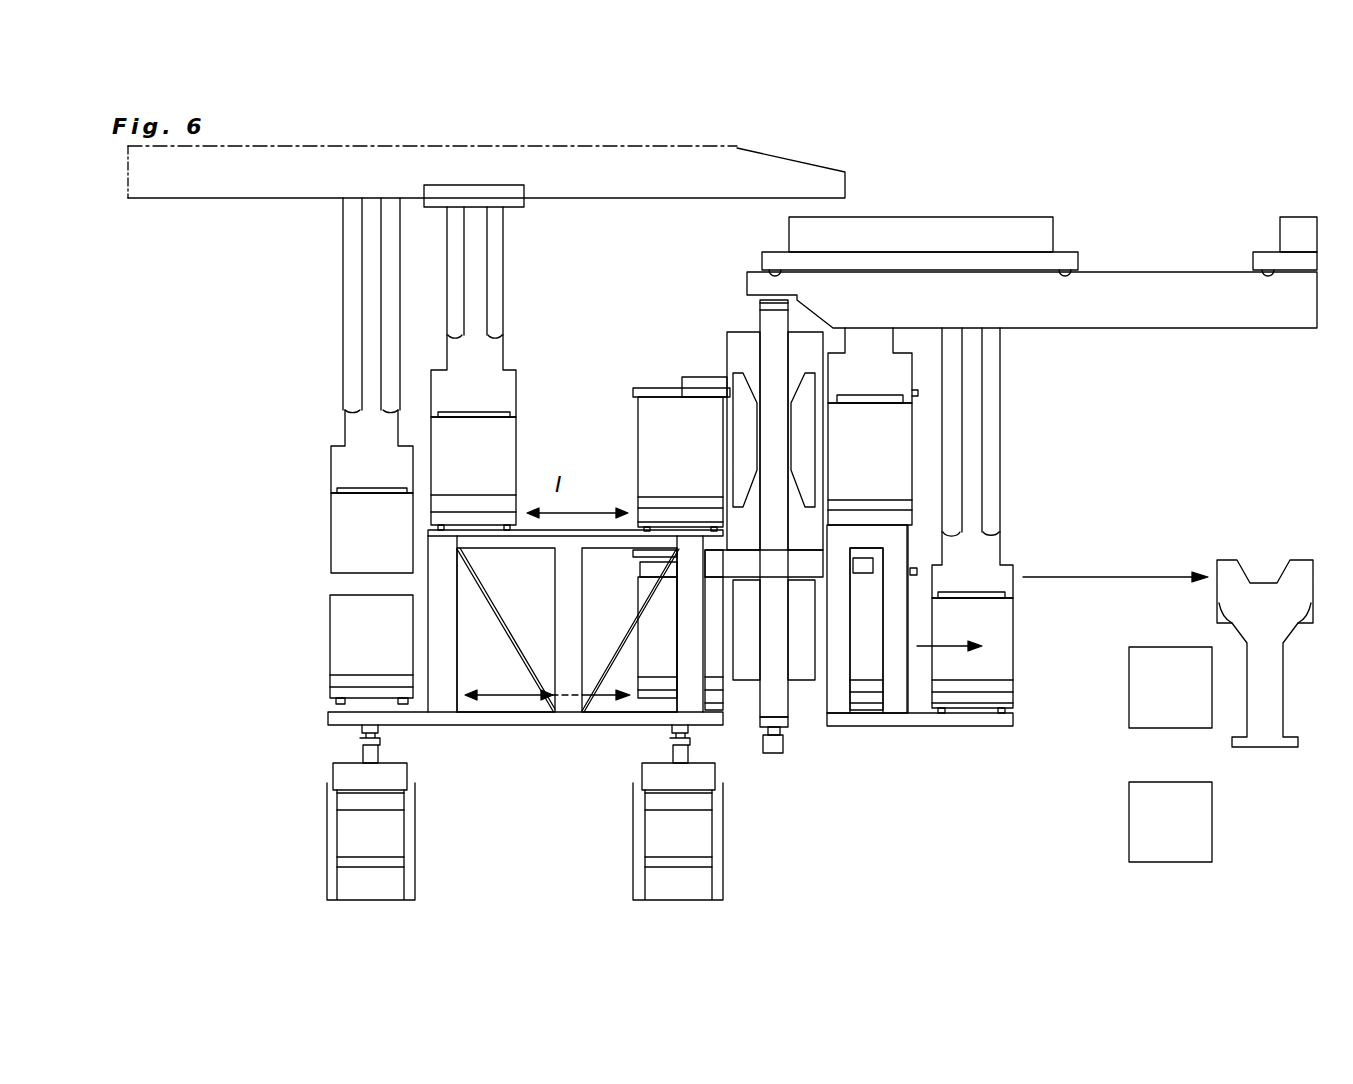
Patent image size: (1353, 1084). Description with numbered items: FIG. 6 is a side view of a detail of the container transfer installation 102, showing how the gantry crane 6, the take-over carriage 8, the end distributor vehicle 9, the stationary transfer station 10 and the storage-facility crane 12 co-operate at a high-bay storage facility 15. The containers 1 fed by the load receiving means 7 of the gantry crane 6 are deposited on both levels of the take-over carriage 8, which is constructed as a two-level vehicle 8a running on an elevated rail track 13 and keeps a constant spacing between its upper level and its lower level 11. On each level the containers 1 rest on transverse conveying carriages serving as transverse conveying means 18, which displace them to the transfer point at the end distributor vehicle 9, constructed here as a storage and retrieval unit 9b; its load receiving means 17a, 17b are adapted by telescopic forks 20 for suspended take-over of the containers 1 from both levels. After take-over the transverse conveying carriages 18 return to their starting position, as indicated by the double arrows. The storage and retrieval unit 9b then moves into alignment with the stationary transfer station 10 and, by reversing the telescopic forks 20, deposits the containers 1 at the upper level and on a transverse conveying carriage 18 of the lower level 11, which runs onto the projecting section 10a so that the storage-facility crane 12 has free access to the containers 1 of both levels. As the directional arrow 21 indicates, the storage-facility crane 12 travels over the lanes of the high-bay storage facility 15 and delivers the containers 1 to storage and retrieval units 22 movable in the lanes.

The container 1 is at (347, 533).
The gantry crane 6 is at (822, 177).
The load receiving means 7 is at (350, 462).
The take-over carriage 8 is at (525, 659).
The two-level vehicle 8a is at (553, 724).
The end distributor vehicle 9 is at (747, 522).
The storage and retrieval unit 9b is at (772, 335).
The stationary transfer station 10 is at (893, 697).
The section 10a is at (990, 724).
The lower level 11 is at (880, 357).
The storage-facility crane 12 is at (1055, 262).
The rail track 13 is at (378, 740).
The high-bay storage facility 15 is at (1287, 391).
The load receiving means 17a is at (690, 385).
The load receiving means 17b is at (655, 566).
The transverse conveying means 18 is at (345, 696).
The telescopic forks 20 is at (745, 477).
The directional arrow 21 is at (1122, 574).
The storage and retrieval unit 22 is at (1272, 700).
The container transfer installation 102 is at (1225, 243).